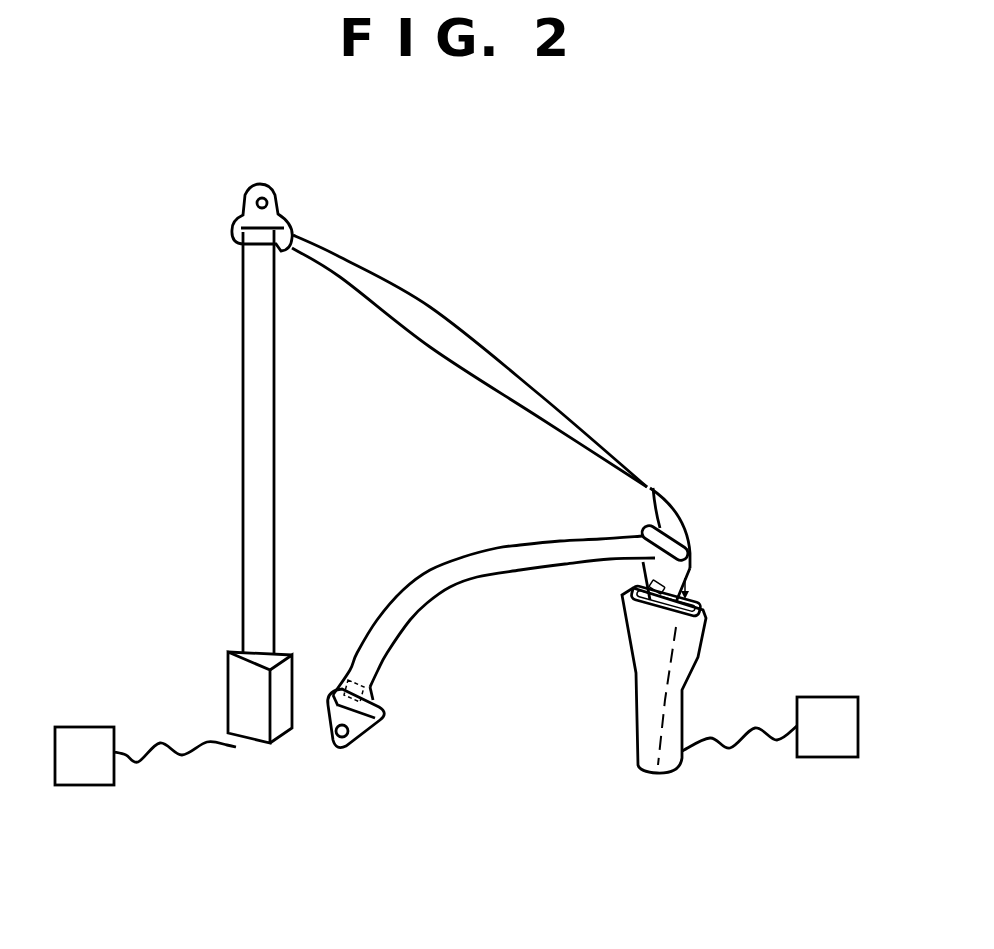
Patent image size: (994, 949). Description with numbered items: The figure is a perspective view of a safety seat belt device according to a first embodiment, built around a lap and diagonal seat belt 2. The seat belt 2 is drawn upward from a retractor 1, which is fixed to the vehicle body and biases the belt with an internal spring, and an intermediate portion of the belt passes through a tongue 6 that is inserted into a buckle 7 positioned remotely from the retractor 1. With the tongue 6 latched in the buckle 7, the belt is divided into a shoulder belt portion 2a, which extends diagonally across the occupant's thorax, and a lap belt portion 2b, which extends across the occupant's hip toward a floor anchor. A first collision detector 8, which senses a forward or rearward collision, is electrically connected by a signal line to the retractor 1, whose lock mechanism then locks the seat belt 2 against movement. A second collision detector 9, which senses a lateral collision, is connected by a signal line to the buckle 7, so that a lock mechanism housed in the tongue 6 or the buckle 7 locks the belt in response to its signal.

The retractor 1 is at (253, 730).
The seat belt 2 is at (238, 434).
The shoulder belt portion 2a is at (490, 365).
The lap belt portion 2b is at (474, 579).
The tongue 6 is at (693, 557).
The buckle 7 is at (650, 672).
The first collision detector 8 is at (78, 728).
The second collision detector 9 is at (853, 715).